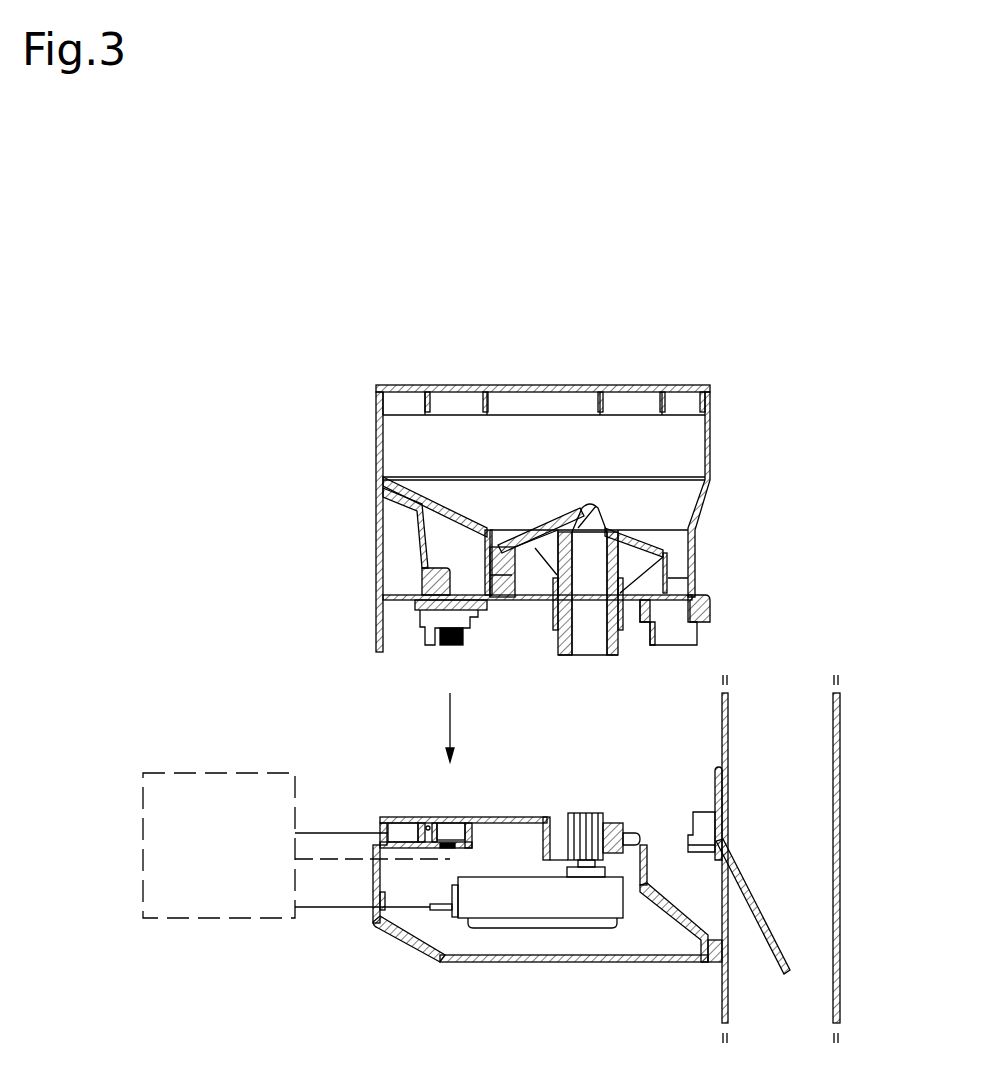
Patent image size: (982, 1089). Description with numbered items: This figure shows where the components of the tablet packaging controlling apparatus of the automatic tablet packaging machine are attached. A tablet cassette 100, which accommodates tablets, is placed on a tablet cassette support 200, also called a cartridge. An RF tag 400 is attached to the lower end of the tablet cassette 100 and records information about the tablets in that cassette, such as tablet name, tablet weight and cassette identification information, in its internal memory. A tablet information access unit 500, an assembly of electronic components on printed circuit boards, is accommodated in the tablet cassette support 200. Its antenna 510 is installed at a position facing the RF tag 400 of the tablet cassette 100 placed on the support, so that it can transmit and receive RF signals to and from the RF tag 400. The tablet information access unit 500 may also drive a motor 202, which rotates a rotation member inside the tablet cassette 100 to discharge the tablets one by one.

The tablet cassette 100 is at (710, 458).
The tablet cassette support 200 is at (542, 914).
The motor 202 is at (570, 908).
The RF tag 400 is at (463, 643).
The tablet information access unit 500 is at (200, 788).
The antenna 510 is at (443, 848).